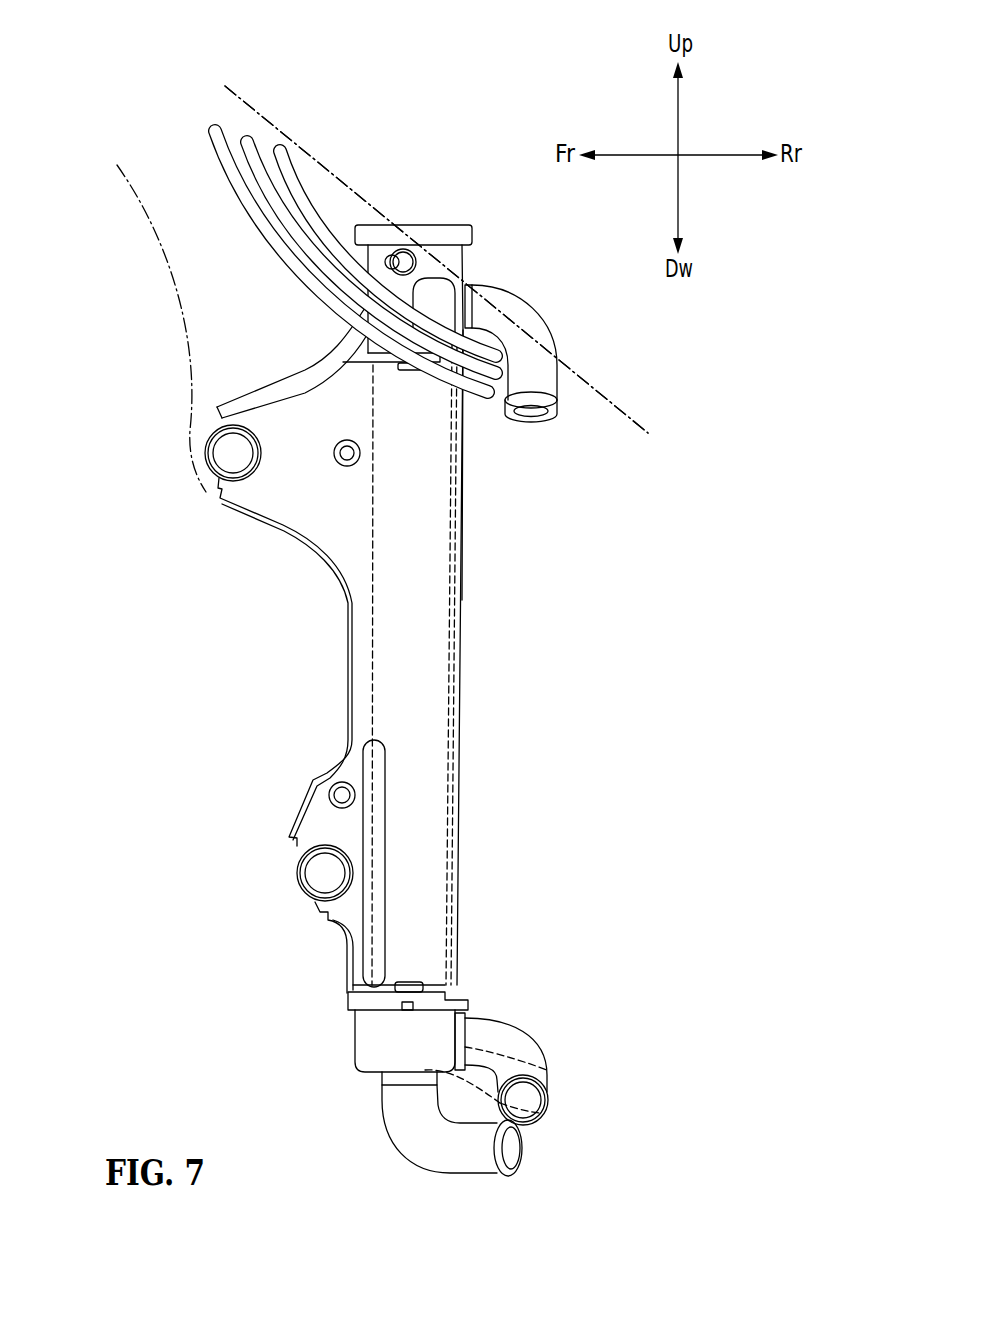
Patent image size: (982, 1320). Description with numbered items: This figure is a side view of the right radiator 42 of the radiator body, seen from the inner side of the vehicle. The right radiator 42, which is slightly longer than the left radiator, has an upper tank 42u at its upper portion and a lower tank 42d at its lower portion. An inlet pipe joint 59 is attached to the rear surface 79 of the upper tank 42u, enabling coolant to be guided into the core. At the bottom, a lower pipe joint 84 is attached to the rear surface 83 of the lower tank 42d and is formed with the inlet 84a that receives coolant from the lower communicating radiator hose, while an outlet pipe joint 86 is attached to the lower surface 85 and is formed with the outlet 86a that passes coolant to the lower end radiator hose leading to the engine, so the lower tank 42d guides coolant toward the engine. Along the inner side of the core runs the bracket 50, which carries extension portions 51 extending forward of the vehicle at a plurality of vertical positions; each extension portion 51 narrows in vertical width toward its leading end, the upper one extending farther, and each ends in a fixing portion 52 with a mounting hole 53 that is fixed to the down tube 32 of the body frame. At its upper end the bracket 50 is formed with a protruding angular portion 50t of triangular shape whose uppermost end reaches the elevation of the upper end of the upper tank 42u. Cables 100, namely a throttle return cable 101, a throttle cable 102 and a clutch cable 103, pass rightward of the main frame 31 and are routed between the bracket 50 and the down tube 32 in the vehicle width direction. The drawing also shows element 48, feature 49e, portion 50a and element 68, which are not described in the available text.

The cables 100 is at (355, 201).
The throttle return cable 101 is at (228, 140).
The throttle cable 102 is at (262, 148).
The clutch cable 103 is at (388, 216).
The upper bracket 48 is at (384, 238).
The upper tank 42u is at (424, 265).
The protruding angular portion 50t is at (433, 300).
The right radiator 42 is at (507, 273).
The inlet pipe joint 59 is at (513, 303).
The rear surface 79 is at (480, 297).
The main frame 31 is at (612, 403).
The down tube 32 is at (160, 234).
The fixing portion 52 is at (206, 436).
The mounting hole 53 is at (222, 453).
The extension portion 51 is at (278, 492).
The edge of shroud 49e is at (373, 553).
The side plate of radiator 50a is at (435, 500).
The bracket 50 is at (430, 677).
The lower tank 42d is at (398, 1028).
The rear surface 83 is at (458, 1040).
The lower pipe joint 84 is at (523, 1045).
The inlet 84a is at (548, 1072).
The outlet 86a is at (540, 1113).
The lower surface 85 is at (370, 1077).
The outlet pipe joint 86 is at (412, 1132).
The water pipe 68 is at (450, 1100).